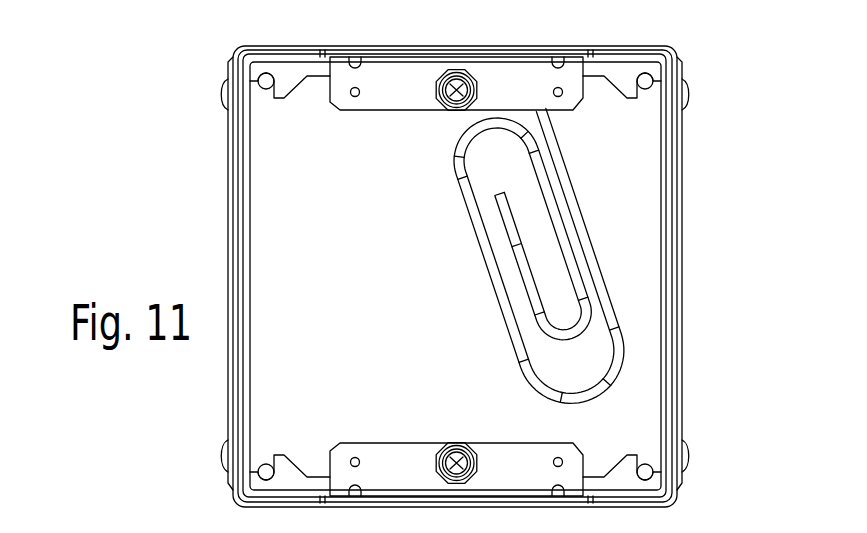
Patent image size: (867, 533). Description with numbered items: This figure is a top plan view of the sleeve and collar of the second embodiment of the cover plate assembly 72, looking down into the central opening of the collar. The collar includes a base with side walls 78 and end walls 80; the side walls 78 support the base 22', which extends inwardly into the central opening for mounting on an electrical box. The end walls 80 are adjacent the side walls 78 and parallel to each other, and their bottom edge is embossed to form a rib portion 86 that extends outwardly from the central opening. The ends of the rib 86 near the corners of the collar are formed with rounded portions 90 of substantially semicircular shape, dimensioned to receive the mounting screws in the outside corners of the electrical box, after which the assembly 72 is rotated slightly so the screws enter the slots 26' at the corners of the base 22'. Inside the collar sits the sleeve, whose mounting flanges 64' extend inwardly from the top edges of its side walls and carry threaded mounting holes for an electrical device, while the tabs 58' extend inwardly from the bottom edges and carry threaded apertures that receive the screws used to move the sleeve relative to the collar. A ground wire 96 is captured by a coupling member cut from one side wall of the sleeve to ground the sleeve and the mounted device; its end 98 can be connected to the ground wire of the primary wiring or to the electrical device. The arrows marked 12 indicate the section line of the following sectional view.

The side walls 78 is at (330, 46).
The rounded portion 90 is at (226, 97).
The end walls 80 is at (685, 155).
The rib portion 86 is at (228, 227).
The cover plate assembly 72 is at (742, 262).
The cover plate assembly 12 is at (168, 142).
The slot 26' is at (460, 276).
The base 22' is at (455, 276).
The mounting flange 64' is at (456, 276).
The tab 58' is at (441, 277).
The end 98 is at (505, 213).
The ground wire 96 is at (489, 270).